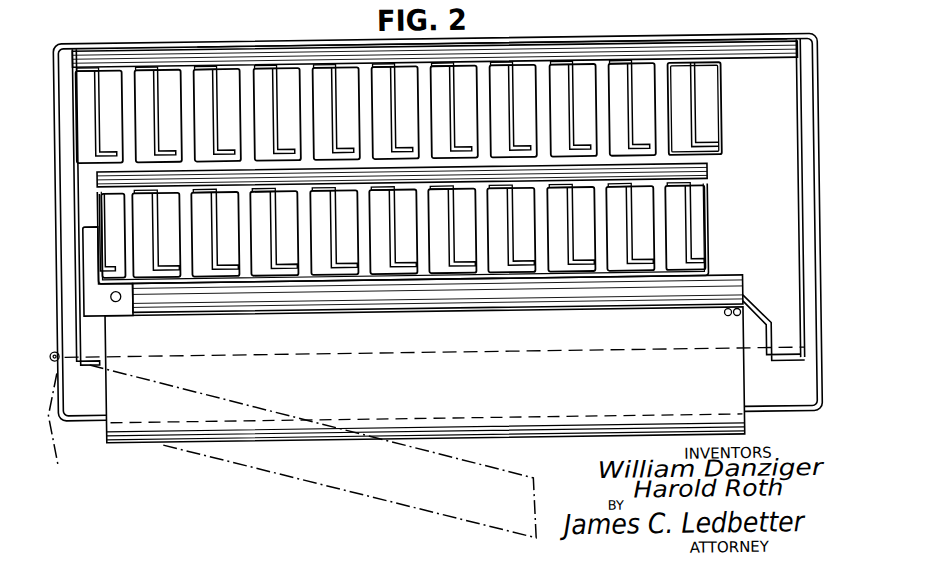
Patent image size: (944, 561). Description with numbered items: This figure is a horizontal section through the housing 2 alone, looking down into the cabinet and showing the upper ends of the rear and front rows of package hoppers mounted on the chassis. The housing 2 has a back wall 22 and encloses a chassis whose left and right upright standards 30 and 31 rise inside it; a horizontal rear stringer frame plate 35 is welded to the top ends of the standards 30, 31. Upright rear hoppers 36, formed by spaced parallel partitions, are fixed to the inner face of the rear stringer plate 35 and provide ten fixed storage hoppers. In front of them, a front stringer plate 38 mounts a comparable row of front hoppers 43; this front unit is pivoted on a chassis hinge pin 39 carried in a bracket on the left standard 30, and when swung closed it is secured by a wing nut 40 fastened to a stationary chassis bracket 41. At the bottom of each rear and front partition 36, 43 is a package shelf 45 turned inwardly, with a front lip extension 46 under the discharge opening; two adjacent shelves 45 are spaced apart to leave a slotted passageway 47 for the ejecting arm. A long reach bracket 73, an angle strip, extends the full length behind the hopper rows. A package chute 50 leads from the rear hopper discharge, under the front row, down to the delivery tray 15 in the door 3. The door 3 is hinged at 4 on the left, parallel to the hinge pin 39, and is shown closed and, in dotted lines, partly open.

The housing 2 is at (58, 38).
The back wall 22 is at (612, 42).
The rear stringer frame plate 35 is at (235, 52).
The left upright standard 30 is at (76, 113).
The right upright standard 31 is at (798, 173).
The slotted passageway 47 is at (127, 75).
The package shelf 45 is at (170, 79).
The rear hoppers 36 is at (330, 101).
The front lip extension 46 is at (143, 143).
The long reach bracket 73 is at (710, 176).
The front hoppers 43 is at (708, 229).
The front stringer plate 38 is at (398, 304).
The chassis hinge pin 39 is at (116, 298).
The package chute 50 is at (435, 374).
The delivery tray 15 is at (512, 433).
The stationary chassis bracket 41 is at (762, 314).
The wing nut 40 is at (723, 316).
The door hinge 4 is at (50, 347).
The door 3 is at (790, 415).